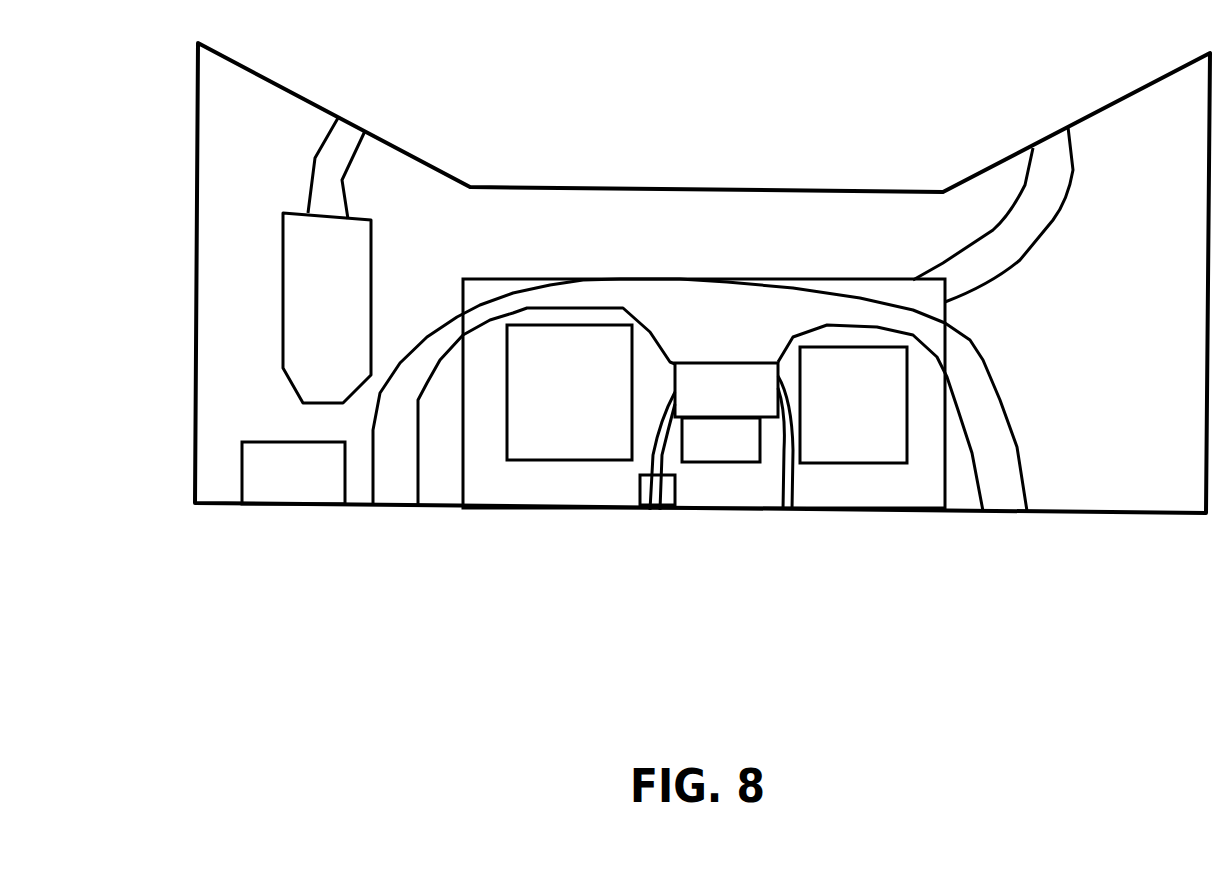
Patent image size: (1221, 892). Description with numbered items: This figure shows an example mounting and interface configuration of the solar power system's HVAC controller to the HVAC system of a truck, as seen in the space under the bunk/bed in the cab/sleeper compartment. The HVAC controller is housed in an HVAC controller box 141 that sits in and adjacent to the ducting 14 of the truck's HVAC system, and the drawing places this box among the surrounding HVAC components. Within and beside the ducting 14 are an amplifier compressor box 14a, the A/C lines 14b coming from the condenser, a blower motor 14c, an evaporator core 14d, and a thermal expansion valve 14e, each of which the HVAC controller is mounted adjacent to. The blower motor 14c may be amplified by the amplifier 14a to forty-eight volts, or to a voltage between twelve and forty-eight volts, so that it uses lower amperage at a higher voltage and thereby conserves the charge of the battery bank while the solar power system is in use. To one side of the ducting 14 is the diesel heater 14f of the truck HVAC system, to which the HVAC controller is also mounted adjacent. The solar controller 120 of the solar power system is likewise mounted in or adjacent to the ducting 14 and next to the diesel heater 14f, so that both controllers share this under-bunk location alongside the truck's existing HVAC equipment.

The ducting 14 is at (435, 332).
The amplifier compressor box 14a is at (822, 394).
The A/C lines 14b is at (795, 447).
The blower motor 14c is at (701, 453).
The evaporator core 14d is at (694, 412).
The thermal expansion valve 14e is at (648, 495).
The diesel heater 14f is at (282, 303).
The solar controller 120 is at (266, 481).
The HVAC controller box 141 is at (487, 278).